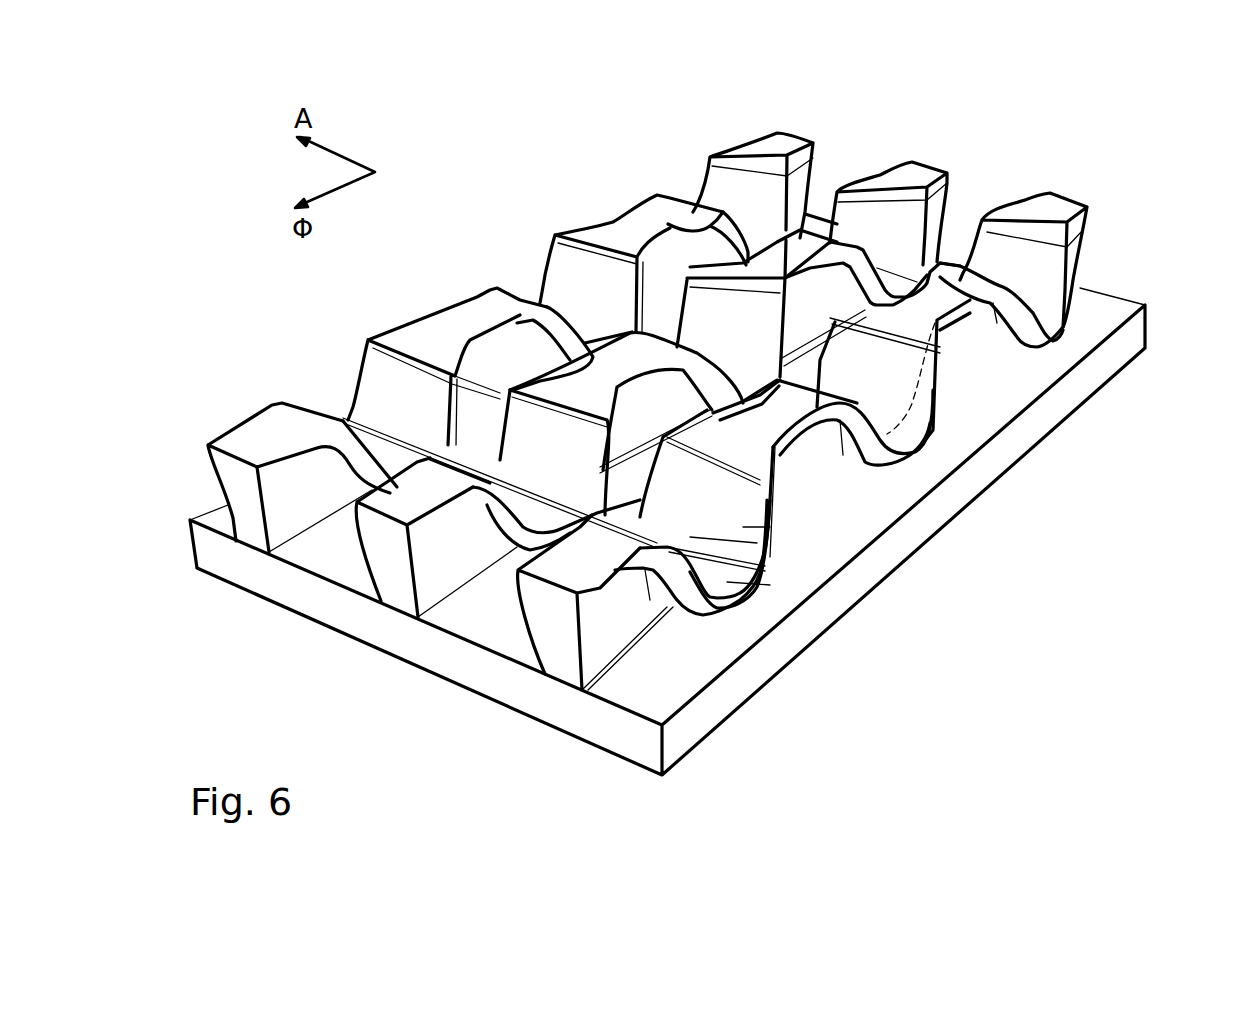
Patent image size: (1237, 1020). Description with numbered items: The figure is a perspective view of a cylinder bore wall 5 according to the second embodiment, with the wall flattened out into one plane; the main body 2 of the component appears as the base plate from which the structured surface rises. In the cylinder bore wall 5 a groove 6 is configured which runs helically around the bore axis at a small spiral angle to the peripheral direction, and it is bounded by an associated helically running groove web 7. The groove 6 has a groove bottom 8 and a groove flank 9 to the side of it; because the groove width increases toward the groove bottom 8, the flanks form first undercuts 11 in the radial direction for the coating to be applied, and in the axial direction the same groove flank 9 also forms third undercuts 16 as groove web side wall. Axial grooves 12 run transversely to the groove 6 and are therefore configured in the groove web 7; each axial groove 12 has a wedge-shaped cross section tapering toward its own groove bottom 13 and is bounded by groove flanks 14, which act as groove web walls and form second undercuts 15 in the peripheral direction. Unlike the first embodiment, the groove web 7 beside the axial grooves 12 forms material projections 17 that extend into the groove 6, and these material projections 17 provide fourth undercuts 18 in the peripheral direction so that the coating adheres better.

The main body 2 is at (1093, 300).
The cylinder bore wall 5 is at (908, 173).
The groove 6 is at (943, 252).
The groove web 7 is at (797, 257).
The groove bottom 8 is at (675, 312).
The groove flank 9 is at (657, 265).
The first undercuts 11 is at (708, 157).
The axial grooves 12 is at (343, 417).
The groove bottom 13 is at (725, 583).
The groove flanks 14 is at (523, 417).
The second undercuts 15 is at (660, 543).
The third undercuts 16 is at (380, 593).
The material projections 17 is at (542, 300).
The fourth undercuts 18 is at (923, 398).